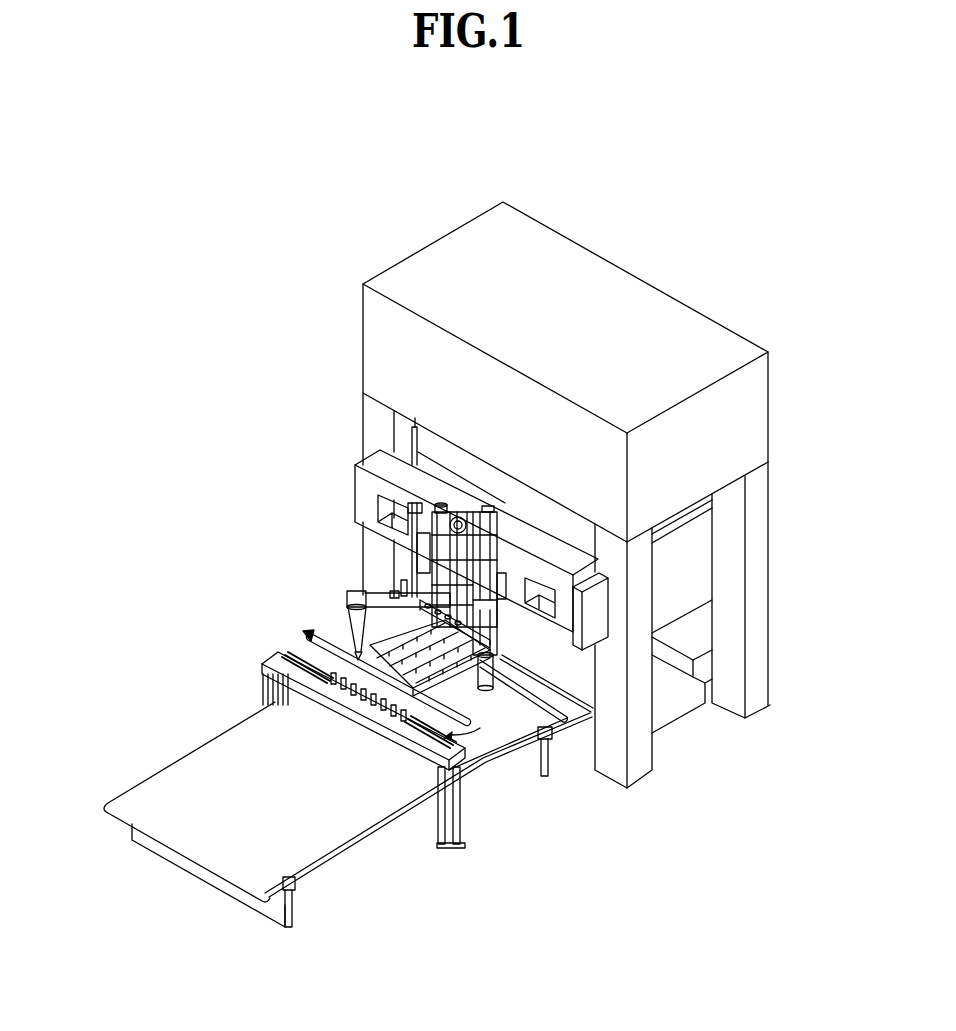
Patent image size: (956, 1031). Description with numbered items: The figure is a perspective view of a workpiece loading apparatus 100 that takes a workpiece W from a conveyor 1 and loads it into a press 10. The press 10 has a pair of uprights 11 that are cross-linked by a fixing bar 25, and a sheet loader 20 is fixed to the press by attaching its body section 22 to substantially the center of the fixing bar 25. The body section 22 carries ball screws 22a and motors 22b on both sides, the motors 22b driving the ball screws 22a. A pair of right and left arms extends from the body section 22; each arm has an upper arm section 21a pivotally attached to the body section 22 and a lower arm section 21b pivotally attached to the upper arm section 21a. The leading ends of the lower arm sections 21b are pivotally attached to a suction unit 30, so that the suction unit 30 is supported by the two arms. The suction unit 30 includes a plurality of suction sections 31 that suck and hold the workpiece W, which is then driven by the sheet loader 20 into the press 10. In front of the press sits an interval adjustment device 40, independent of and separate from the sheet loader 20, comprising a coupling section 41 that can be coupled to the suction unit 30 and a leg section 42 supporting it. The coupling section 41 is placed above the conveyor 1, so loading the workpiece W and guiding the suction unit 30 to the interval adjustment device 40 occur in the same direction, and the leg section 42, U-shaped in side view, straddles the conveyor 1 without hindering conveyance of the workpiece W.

The workpiece loading apparatus 100 is at (727, 268).
The press 10 is at (628, 249).
The uprights 11 is at (378, 421).
The sheet loader 20 is at (432, 506).
The upper arm section 21a is at (378, 598).
The lower arm section 21b is at (347, 582).
The body section 22 is at (422, 557).
The ball screws 22a is at (495, 590).
The motors 22b is at (461, 520).
The fixing bar 25 is at (375, 491).
The suction unit 30 is at (304, 632).
The suction sections 31 is at (403, 650).
The interval adjustment device 40 is at (473, 743).
The coupling section 41 is at (342, 713).
The leg section 42 is at (262, 687).
The workpiece W is at (510, 715).
The conveyor 1 is at (305, 830).